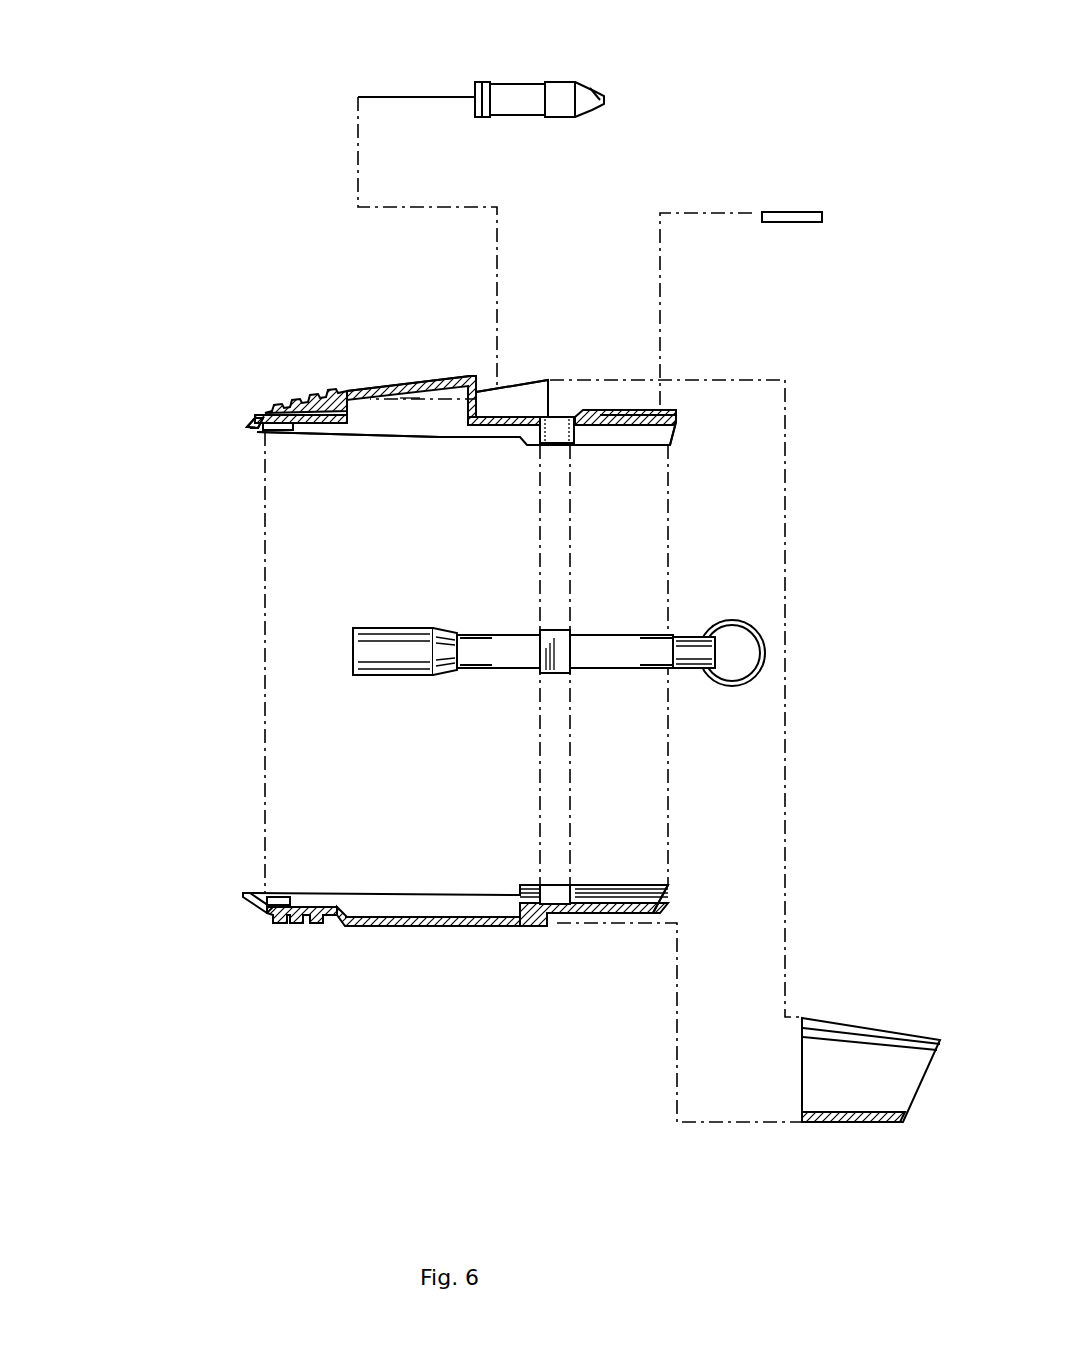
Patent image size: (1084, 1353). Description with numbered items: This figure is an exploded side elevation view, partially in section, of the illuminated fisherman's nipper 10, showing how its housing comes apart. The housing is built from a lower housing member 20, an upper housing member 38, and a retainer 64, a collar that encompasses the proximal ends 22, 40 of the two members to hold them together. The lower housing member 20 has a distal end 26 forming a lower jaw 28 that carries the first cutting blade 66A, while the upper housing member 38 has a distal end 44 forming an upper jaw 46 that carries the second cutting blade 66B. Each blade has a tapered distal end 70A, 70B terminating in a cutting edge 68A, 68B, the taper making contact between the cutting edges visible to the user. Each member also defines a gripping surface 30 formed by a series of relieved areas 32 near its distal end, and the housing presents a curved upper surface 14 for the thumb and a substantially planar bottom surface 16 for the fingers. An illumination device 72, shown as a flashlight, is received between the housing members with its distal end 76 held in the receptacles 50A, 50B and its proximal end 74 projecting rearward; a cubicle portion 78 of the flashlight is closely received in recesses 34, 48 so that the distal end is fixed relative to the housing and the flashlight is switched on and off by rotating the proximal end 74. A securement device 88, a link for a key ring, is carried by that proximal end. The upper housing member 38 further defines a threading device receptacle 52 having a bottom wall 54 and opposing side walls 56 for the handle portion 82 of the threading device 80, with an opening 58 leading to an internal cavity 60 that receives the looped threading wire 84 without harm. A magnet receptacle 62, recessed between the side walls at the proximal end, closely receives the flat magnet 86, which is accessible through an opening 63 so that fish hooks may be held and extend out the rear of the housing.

The nipper 10 is at (153, 160).
The curved upper surface 14 is at (410, 377).
The substantially planar bottom surface 16 is at (523, 926).
The lower housing member 20 is at (477, 927).
The proximal end 22 is at (668, 893).
The distal end 26 is at (268, 923).
The lower jaw 28 is at (395, 893).
The gripping surface 30 is at (334, 924).
The relieved areas 32 is at (305, 926).
The recess 34 is at (560, 885).
The upper housing member 38 is at (372, 383).
The proximal end 40 is at (680, 424).
The distal end 44 is at (282, 394).
The upper jaw 46 is at (360, 434).
The recess 48 is at (562, 442).
The receptacle 50A is at (458, 893).
The receptacle 50B is at (412, 418).
The threading device receptacle 52 is at (546, 393).
The bottom wall 54 is at (537, 380).
The side walls 56 is at (554, 382).
The opening 58 is at (496, 382).
The cavity 60 is at (455, 415).
The magnet receptacle 62 is at (665, 409).
The opening 63 is at (692, 397).
The retainer 64 is at (832, 1018).
The first cutting blade 66A is at (332, 893).
The second cutting blade 66B is at (298, 430).
The cutting edge 68A is at (243, 893).
The cutting edge 68B is at (251, 428).
The distal end 70A is at (245, 897).
The distal end 70B is at (250, 420).
The illumination device 72 is at (613, 632).
The proximal end 74 is at (688, 640).
The distal end 76 is at (355, 630).
The cubicle portion 78 is at (545, 630).
The threading device 80 is at (520, 80).
The handle portion 82 is at (592, 85).
The threading wire 84 is at (410, 96).
The magnet 86 is at (784, 212).
The securement device 88 is at (768, 653).